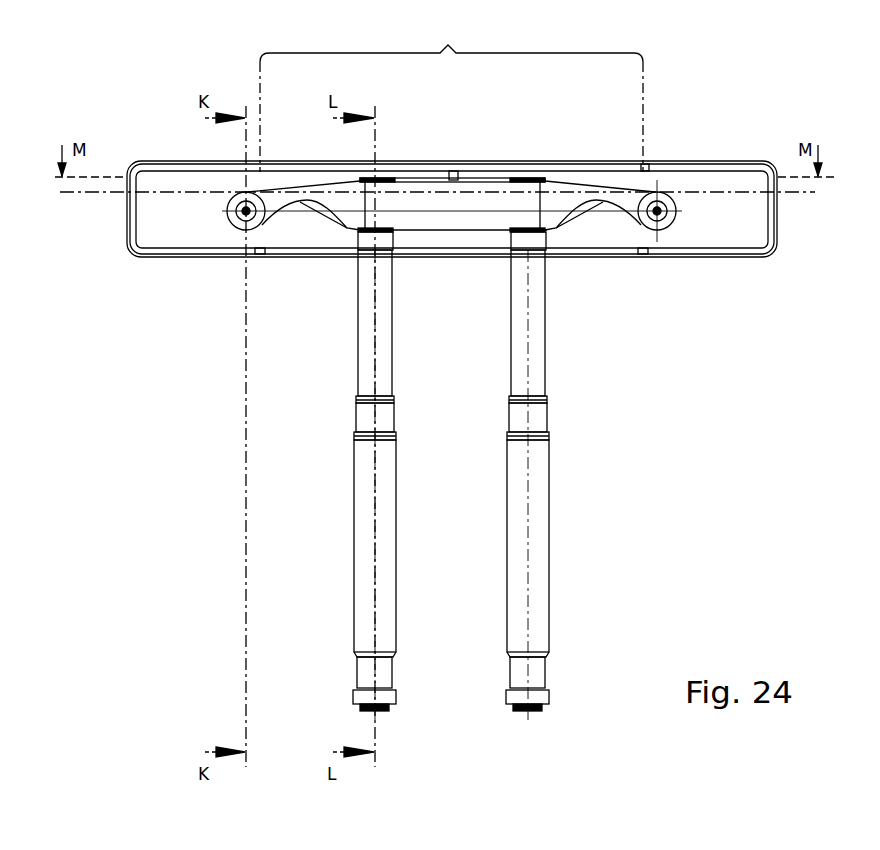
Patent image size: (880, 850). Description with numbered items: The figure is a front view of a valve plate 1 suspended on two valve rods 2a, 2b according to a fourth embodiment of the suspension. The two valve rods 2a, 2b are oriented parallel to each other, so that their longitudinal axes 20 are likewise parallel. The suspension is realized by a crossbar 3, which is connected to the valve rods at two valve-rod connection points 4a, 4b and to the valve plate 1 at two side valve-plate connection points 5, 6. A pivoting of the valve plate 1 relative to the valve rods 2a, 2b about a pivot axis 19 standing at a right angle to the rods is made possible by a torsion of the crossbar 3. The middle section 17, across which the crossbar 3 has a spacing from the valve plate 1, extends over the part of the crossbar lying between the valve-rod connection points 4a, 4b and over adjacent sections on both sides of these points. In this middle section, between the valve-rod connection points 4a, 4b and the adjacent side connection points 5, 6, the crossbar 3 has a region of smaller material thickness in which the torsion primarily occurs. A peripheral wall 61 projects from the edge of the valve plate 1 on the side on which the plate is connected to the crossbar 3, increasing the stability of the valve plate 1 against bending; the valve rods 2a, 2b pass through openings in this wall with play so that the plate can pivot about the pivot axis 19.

The valve plate 1 is at (464, 203).
The valve rod 2a is at (354, 538).
The valve rod 2b is at (550, 536).
The crossbar 3 is at (460, 219).
The valve-rod connection point 4a is at (345, 233).
The valve-rod connection point 4b is at (560, 233).
The side valve-plate connection point 5 is at (230, 233).
The side valve-plate connection point 6 is at (678, 233).
The middle section 17 is at (451, 95).
The pivot axis 19 is at (795, 195).
The longitudinal axis 20 is at (375, 492).
The peripheral wall 61 is at (170, 256).